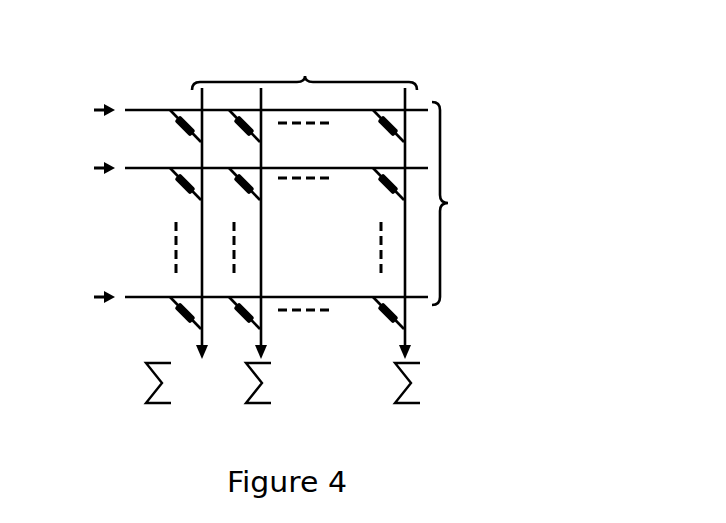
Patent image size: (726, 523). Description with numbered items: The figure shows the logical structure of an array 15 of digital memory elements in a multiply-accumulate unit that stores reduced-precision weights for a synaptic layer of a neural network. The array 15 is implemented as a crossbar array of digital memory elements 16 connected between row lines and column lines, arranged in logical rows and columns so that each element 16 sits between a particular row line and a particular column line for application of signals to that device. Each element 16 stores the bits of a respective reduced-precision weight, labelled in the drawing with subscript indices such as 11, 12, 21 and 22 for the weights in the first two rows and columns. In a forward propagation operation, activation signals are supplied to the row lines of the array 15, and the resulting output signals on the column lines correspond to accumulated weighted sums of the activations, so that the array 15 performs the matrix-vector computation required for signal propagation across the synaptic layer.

The array 15 is at (552, 73).
The digital memory element 16 is at (390, 122).
The weight element W11 11 is at (175, 129).
The weight element W12 12 is at (234, 129).
The weight element W21 21 is at (175, 187).
The weight element W22 22 is at (234, 187).